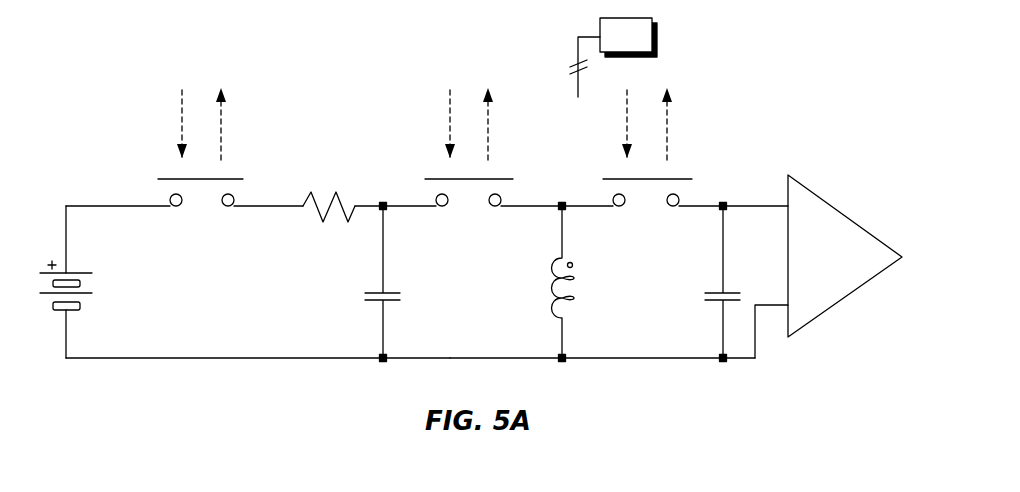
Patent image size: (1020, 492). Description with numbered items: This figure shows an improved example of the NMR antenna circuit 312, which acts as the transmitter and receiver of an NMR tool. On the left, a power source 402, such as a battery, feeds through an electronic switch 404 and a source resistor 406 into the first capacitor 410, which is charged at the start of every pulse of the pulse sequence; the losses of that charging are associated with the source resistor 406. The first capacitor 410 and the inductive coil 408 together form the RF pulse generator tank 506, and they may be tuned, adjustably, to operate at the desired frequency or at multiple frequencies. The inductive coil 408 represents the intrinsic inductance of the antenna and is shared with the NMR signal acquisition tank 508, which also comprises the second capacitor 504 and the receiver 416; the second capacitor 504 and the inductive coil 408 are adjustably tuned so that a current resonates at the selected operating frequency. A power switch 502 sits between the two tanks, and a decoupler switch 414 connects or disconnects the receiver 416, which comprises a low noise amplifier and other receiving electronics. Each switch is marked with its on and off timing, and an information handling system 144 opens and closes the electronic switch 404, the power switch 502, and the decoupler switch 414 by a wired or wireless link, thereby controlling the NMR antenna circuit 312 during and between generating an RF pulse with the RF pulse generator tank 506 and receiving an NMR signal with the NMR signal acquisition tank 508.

The information handling system 144 is at (643, 47).
The NMR antenna circuit 312 is at (821, 100).
The power source 402 is at (72, 310).
The electronic switch 404 is at (168, 192).
The source resistor 406 is at (347, 200).
The inductive coil 408 is at (553, 323).
The first capacitor 410 is at (370, 305).
The decoupler switch 414 is at (647, 208).
The receiver 416 is at (843, 297).
The power switch 502 is at (468, 208).
The second capacitor 504 is at (713, 305).
The RF pulse generator tank 506 is at (331, 395).
The NMR signal acquisition tank 508 is at (712, 407).